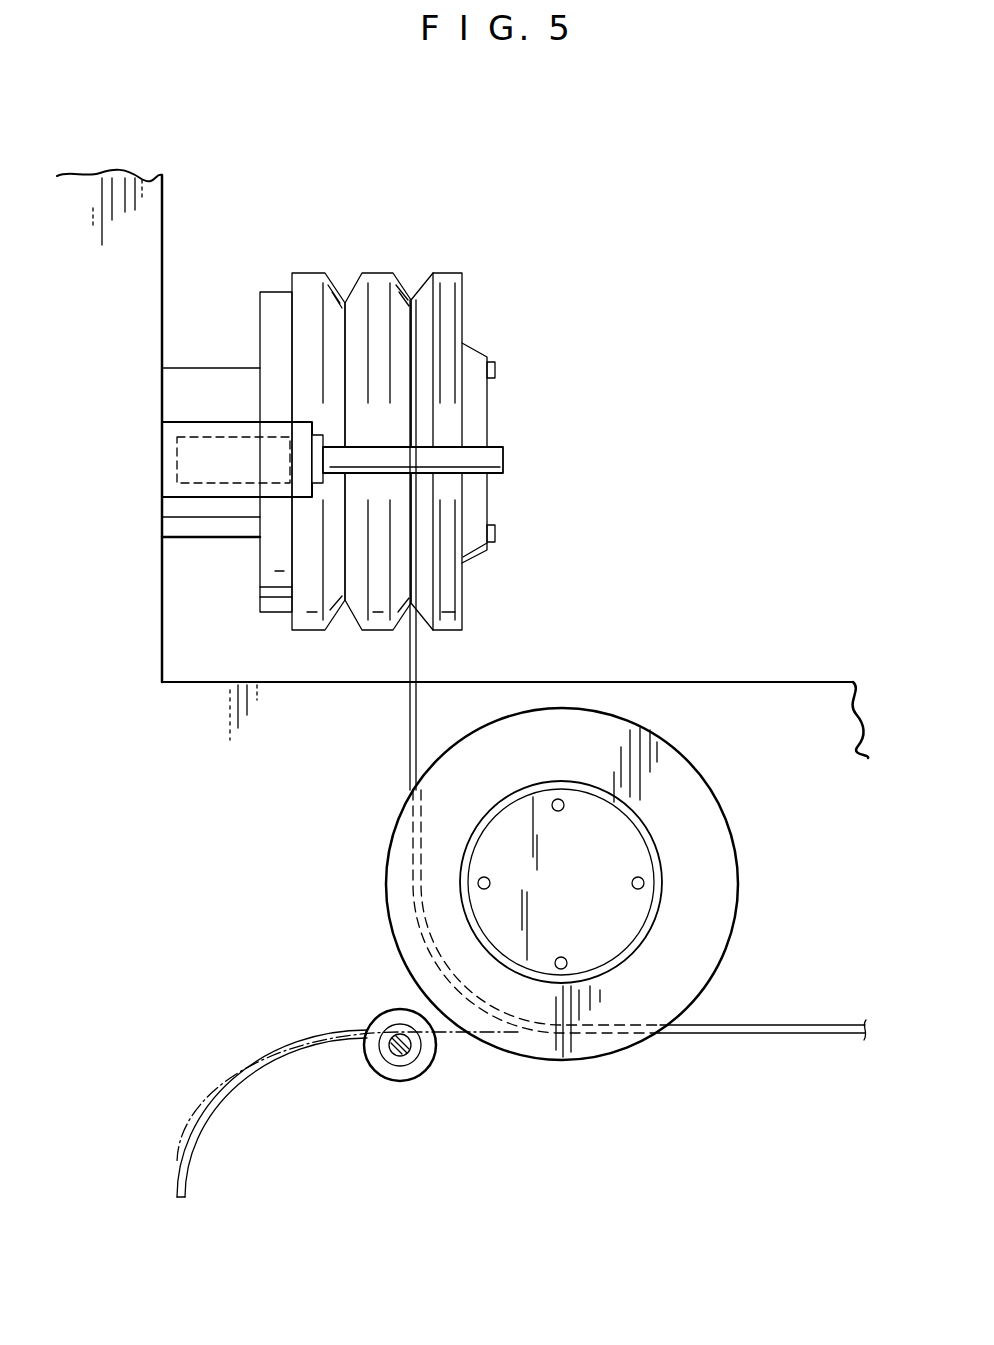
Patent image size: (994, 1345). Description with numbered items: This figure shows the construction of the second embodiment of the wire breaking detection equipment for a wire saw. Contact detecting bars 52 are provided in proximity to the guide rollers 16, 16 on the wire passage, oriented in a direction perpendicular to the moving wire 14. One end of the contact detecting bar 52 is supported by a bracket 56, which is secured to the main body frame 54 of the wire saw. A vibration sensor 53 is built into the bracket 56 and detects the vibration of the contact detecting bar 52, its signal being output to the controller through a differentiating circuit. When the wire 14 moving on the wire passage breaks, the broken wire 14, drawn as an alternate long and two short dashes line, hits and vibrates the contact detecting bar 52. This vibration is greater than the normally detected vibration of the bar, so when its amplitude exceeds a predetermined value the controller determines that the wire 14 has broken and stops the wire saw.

The wire 14 is at (787, 1024).
The guide roller 16 is at (447, 282).
The contact detecting bar 52 is at (443, 453).
The vibration sensor 53 is at (212, 437).
The main body frame 54 is at (158, 843).
The bracket 56 is at (218, 487).